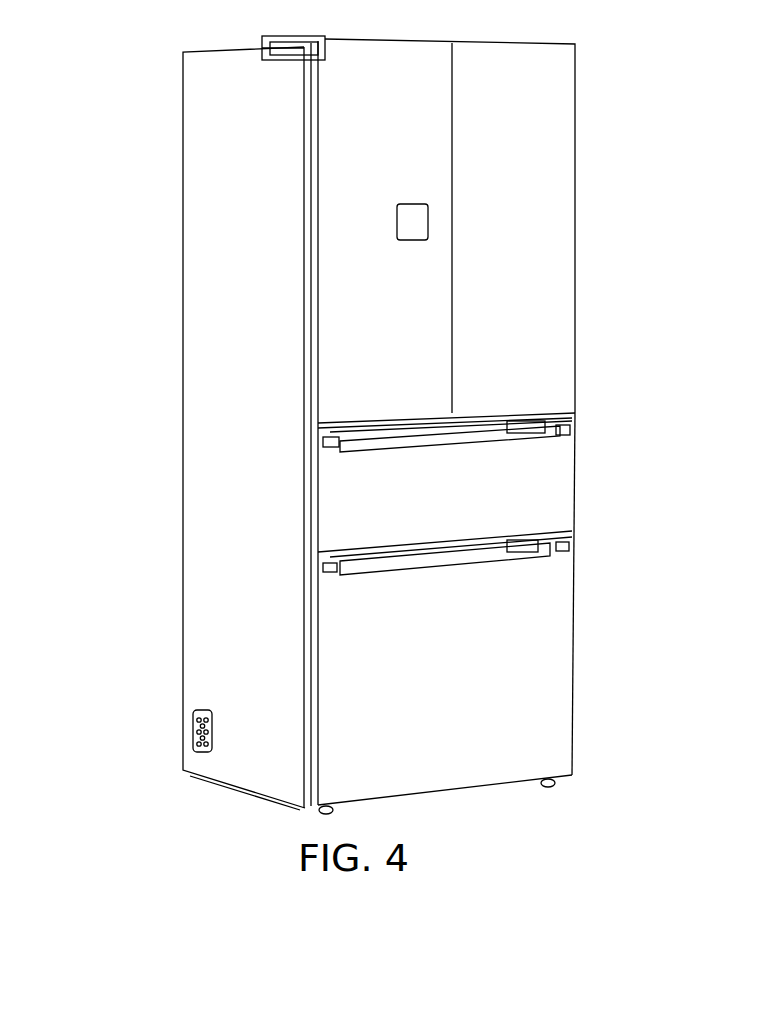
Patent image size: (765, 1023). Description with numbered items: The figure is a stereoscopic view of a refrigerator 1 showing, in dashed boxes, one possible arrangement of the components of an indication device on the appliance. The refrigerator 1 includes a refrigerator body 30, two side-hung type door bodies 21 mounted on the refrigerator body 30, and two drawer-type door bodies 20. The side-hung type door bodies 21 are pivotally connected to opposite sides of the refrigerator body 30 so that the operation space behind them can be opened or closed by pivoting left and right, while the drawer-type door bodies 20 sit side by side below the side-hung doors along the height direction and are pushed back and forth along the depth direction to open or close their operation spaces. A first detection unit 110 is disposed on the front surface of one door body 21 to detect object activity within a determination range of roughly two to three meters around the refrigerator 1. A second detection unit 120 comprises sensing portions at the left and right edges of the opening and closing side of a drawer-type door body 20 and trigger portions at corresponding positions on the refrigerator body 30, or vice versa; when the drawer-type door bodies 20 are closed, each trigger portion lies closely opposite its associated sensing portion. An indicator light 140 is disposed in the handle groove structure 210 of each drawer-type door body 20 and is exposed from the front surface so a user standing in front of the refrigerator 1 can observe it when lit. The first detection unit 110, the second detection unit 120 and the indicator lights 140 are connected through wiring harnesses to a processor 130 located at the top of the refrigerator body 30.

The refrigerator 1 is at (345, 425).
The drawer-type door body 20 is at (473, 587).
The side-hung type door body 21 is at (567, 290).
The refrigerator body 30 is at (200, 360).
The first detection unit 110 is at (421, 226).
The second detection unit 120 is at (563, 432).
The processor 130 is at (268, 58).
The indicator light 140 is at (513, 423).
The handle groove structure 210 is at (413, 432).